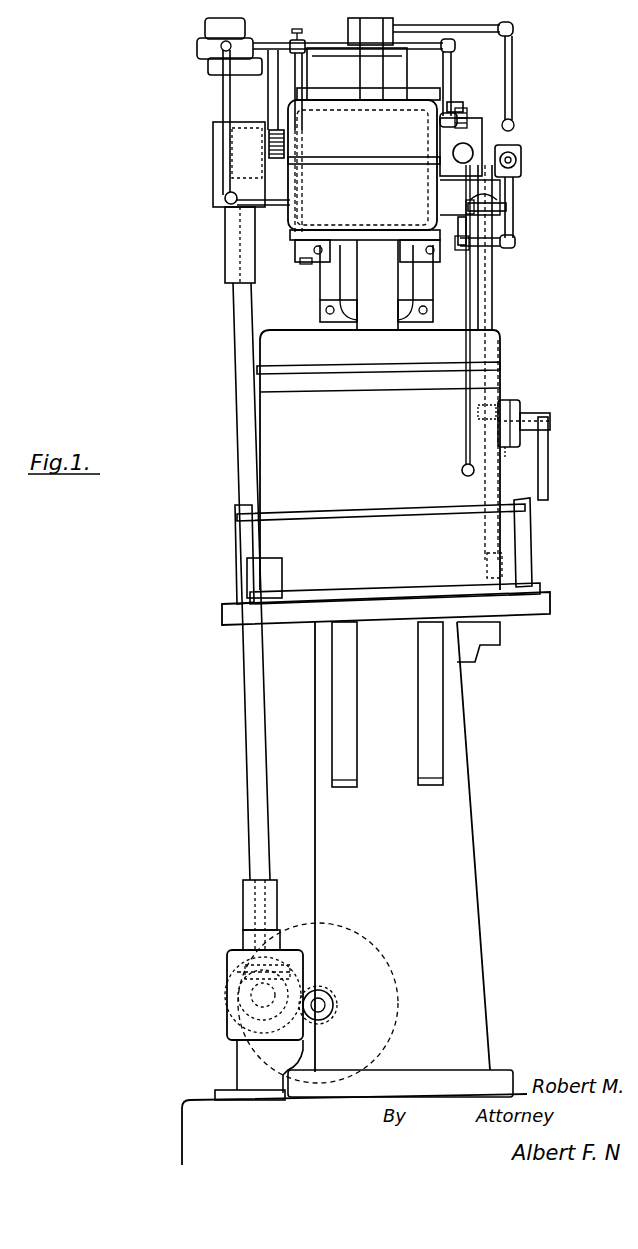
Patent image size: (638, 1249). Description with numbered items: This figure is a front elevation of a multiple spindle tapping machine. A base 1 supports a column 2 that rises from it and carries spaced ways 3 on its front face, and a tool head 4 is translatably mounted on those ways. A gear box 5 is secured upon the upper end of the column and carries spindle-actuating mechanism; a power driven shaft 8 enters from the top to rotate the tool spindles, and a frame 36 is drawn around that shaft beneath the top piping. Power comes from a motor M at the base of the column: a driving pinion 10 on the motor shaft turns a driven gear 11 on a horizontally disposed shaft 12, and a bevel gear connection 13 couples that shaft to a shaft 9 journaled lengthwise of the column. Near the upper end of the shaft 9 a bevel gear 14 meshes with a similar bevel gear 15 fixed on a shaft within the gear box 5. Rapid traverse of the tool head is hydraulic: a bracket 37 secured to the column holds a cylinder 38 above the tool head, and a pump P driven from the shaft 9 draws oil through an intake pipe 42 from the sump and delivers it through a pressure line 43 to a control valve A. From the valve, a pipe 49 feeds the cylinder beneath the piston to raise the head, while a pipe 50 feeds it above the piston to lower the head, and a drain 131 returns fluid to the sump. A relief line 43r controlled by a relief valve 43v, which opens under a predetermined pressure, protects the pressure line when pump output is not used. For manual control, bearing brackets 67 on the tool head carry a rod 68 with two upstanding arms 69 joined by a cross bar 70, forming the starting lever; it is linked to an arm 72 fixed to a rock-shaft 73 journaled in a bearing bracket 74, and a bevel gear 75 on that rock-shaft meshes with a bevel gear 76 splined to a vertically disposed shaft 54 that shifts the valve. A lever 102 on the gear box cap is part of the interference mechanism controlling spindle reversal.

The pump P is at (197, 50).
The intake pipe 42 is at (222, 104).
The relief valve 43v is at (312, 20).
The pressure line 43 is at (451, 62).
The power driven shaft 8 is at (385, 25).
The pipe 50 is at (512, 68).
The frame 36 is at (357, 70).
The lever 102 is at (460, 103).
The gear box 5 is at (364, 176).
The relief line 43r is at (305, 137).
The bevel gear 15 is at (262, 160).
The bevel gear 14 is at (213, 200).
The shaft 9 is at (252, 813).
The driven gear 11 is at (237, 1040).
The horizontally disposed shaft 12 is at (250, 1002).
The bevel gear connection 13 is at (300, 977).
The driving pinion 10 is at (337, 1008).
The motor M is at (372, 950).
The column 2 is at (473, 850).
The base 1 is at (187, 1115).
The ways 3 is at (418, 766).
The rod 68 is at (384, 590).
The cross bar 70 is at (362, 492).
The upstanding arms 69 is at (240, 548).
The bearing brackets 67 is at (283, 574).
The tool head 4 is at (378, 460).
The shaft 54 is at (493, 300).
The control valve A is at (522, 160).
The drain 131 is at (512, 208).
The pipe 49 is at (516, 240).
The cylinder 38 is at (467, 230).
The bracket 37 is at (333, 288).
The bevel gear 76 is at (500, 403).
The bearing bracket 74 is at (522, 412).
The rock-shaft 73 is at (552, 424).
The arm 72 is at (549, 463).
The bevel gear 75 is at (503, 450).